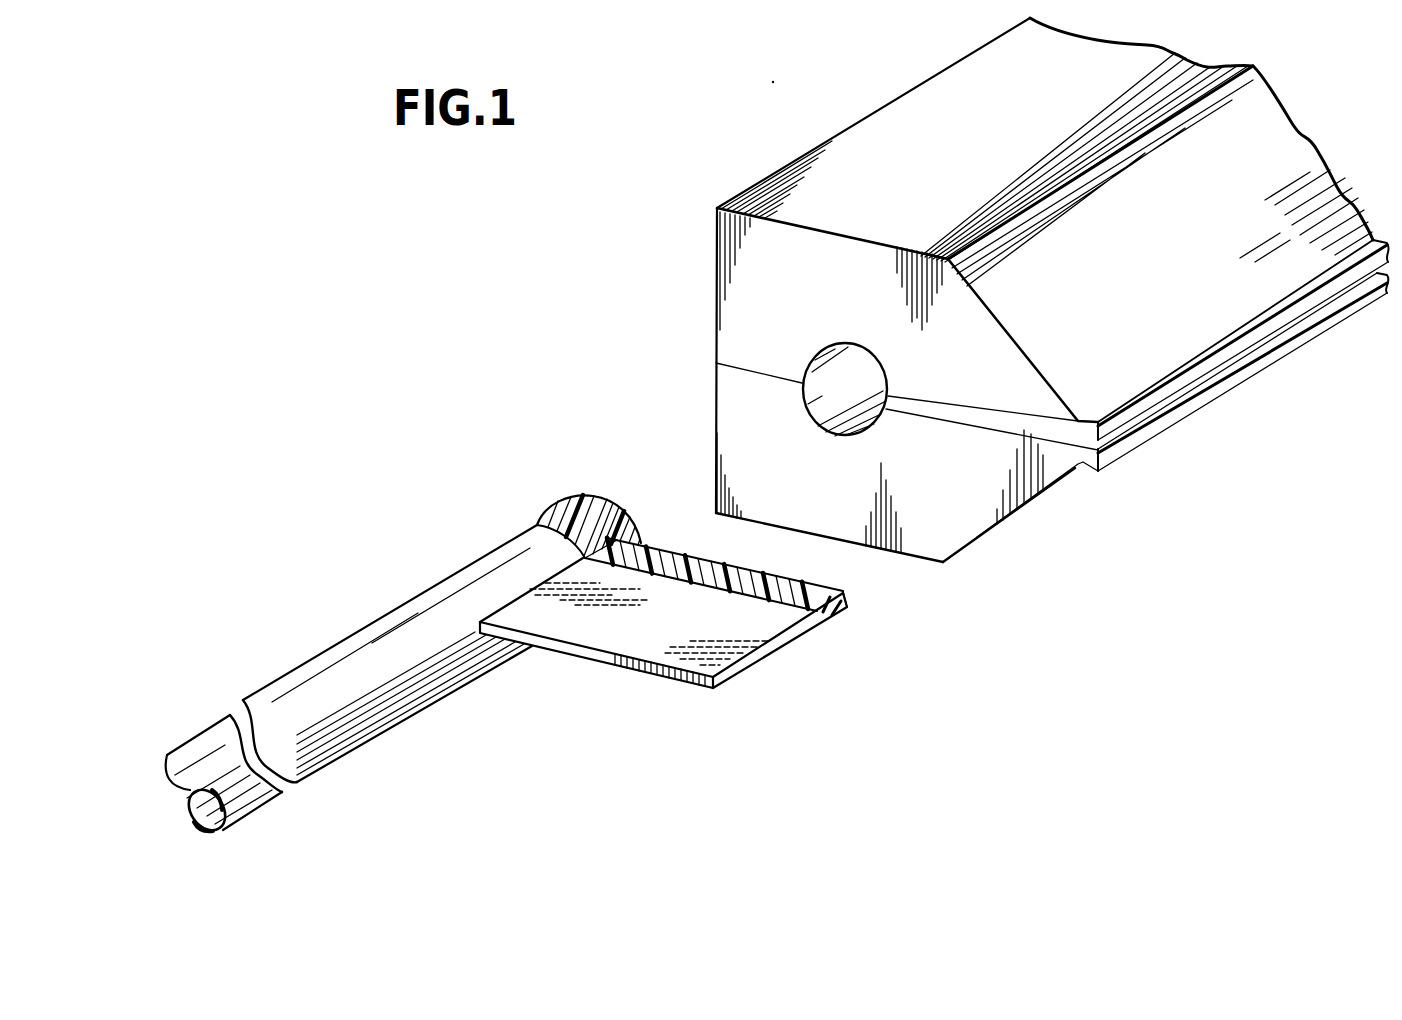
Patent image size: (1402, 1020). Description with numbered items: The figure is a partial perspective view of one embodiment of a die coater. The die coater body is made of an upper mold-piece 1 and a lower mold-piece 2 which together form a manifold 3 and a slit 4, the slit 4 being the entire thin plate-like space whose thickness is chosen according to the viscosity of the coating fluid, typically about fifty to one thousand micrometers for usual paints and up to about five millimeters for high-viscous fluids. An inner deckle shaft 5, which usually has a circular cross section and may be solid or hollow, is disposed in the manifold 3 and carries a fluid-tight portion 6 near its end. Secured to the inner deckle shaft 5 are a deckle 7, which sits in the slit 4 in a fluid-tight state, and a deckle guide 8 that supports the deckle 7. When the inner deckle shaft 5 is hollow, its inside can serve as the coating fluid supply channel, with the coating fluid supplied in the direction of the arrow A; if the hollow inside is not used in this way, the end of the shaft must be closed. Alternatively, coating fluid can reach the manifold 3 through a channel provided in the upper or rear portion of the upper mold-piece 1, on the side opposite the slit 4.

The upper mold-piece 1 is at (730, 292).
The lower mold-piece 2 is at (967, 523).
The manifold 3 is at (840, 380).
The slit 4 is at (1052, 435).
The inner deckle shaft 5 is at (360, 657).
The fluid-tight portion 6 is at (592, 496).
The deckle 7 is at (838, 612).
The deckle guide 8 is at (748, 664).
The arrow indicating coating fluid supply direction A is at (247, 761).